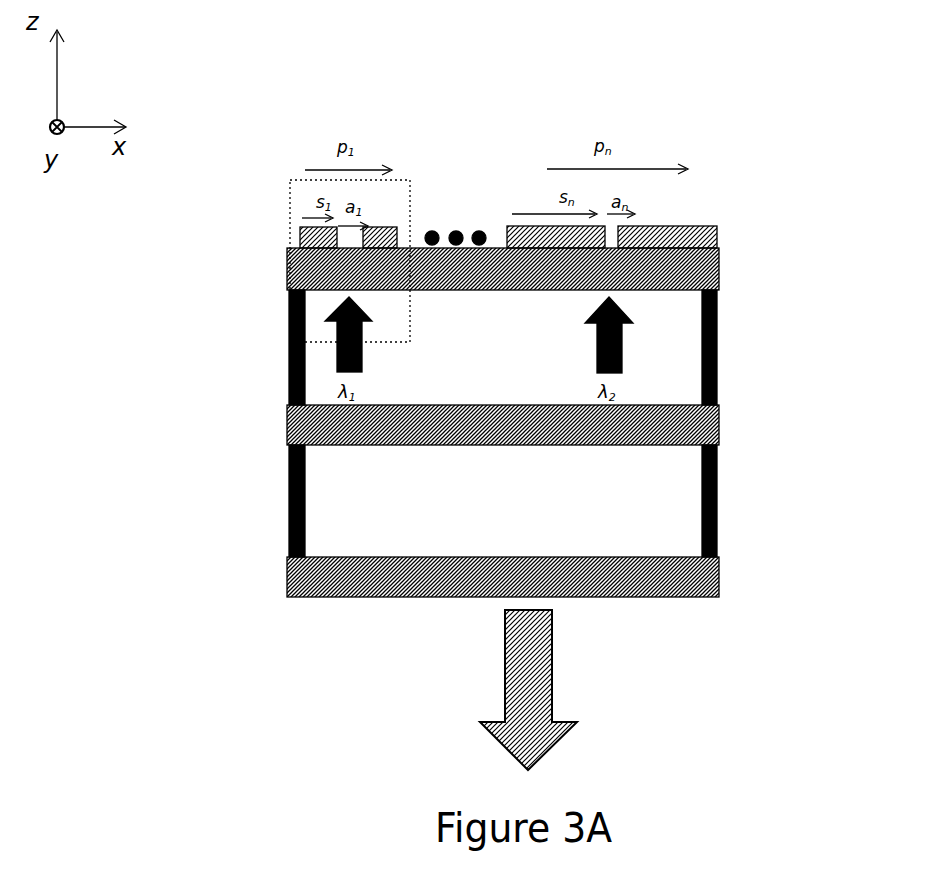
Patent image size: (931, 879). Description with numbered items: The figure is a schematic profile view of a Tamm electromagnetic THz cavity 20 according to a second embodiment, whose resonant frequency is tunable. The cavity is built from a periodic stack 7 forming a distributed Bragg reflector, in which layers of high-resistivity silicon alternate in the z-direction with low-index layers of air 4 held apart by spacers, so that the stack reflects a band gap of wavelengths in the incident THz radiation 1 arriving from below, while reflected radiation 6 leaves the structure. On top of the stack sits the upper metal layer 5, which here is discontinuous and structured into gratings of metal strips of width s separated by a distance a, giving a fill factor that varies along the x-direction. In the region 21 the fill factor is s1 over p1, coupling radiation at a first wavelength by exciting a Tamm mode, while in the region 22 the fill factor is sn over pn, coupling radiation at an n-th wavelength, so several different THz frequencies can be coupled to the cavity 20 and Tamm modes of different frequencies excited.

The incident THz radiation 1 is at (337, 345).
The air layer 4 is at (670, 367).
The upper metal layer 5 is at (491, 212).
The reflected radiation 6 is at (555, 660).
The periodic stack 7 is at (735, 243).
The Tamm electromagnetic THz cavity 20 is at (226, 555).
The region of the upper metal layer 21 is at (297, 242).
The region of the upper metal layer 22 is at (700, 200).